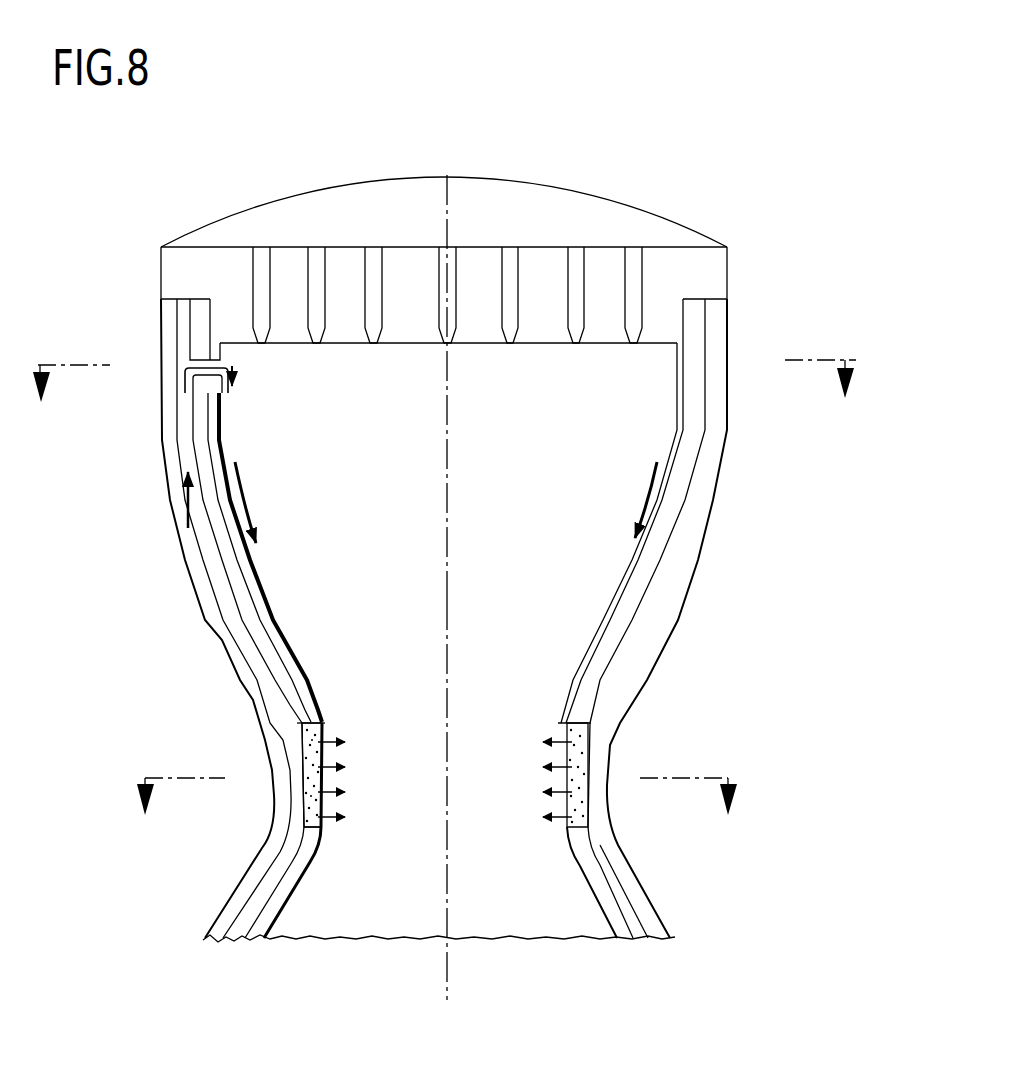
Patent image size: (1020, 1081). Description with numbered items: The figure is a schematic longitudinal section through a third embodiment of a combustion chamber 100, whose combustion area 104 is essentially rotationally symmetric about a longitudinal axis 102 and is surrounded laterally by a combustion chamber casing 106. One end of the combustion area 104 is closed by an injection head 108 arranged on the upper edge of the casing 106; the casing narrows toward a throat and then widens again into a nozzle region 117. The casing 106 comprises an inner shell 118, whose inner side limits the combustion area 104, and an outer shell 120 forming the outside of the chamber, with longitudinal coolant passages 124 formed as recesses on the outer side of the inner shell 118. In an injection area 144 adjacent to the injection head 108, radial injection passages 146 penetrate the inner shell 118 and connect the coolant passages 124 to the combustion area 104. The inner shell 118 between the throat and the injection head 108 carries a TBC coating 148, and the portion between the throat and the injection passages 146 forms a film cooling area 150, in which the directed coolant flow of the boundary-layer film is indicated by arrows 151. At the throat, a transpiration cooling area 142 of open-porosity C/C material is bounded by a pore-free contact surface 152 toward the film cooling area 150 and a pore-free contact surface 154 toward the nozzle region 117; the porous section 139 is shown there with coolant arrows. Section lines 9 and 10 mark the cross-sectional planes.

The combustion chamber 100 is at (146, 286).
The longitudinal axis 102 is at (455, 936).
The combustion area 104 is at (504, 490).
The combustion chamber casing 106 is at (744, 455).
The injection head 108 is at (621, 194).
The nozzle region 117 is at (500, 885).
The inner shell 118 is at (297, 688).
The outer shell 120 is at (263, 843).
The coolant passage 124 is at (262, 900).
The porous section 139 is at (336, 739).
The transpiration cooling area 142 is at (330, 838).
The injection area 144 is at (250, 365).
The injection passage 146 is at (203, 386).
The coating 148 is at (263, 598).
The film cooling area 150 is at (258, 493).
The arrows 151 is at (240, 524).
The contact surface 152 is at (577, 720).
The contact surface 154 is at (593, 842).
The section line 10- 10 is at (440, 362).
The section line 9- 9 is at (434, 781).